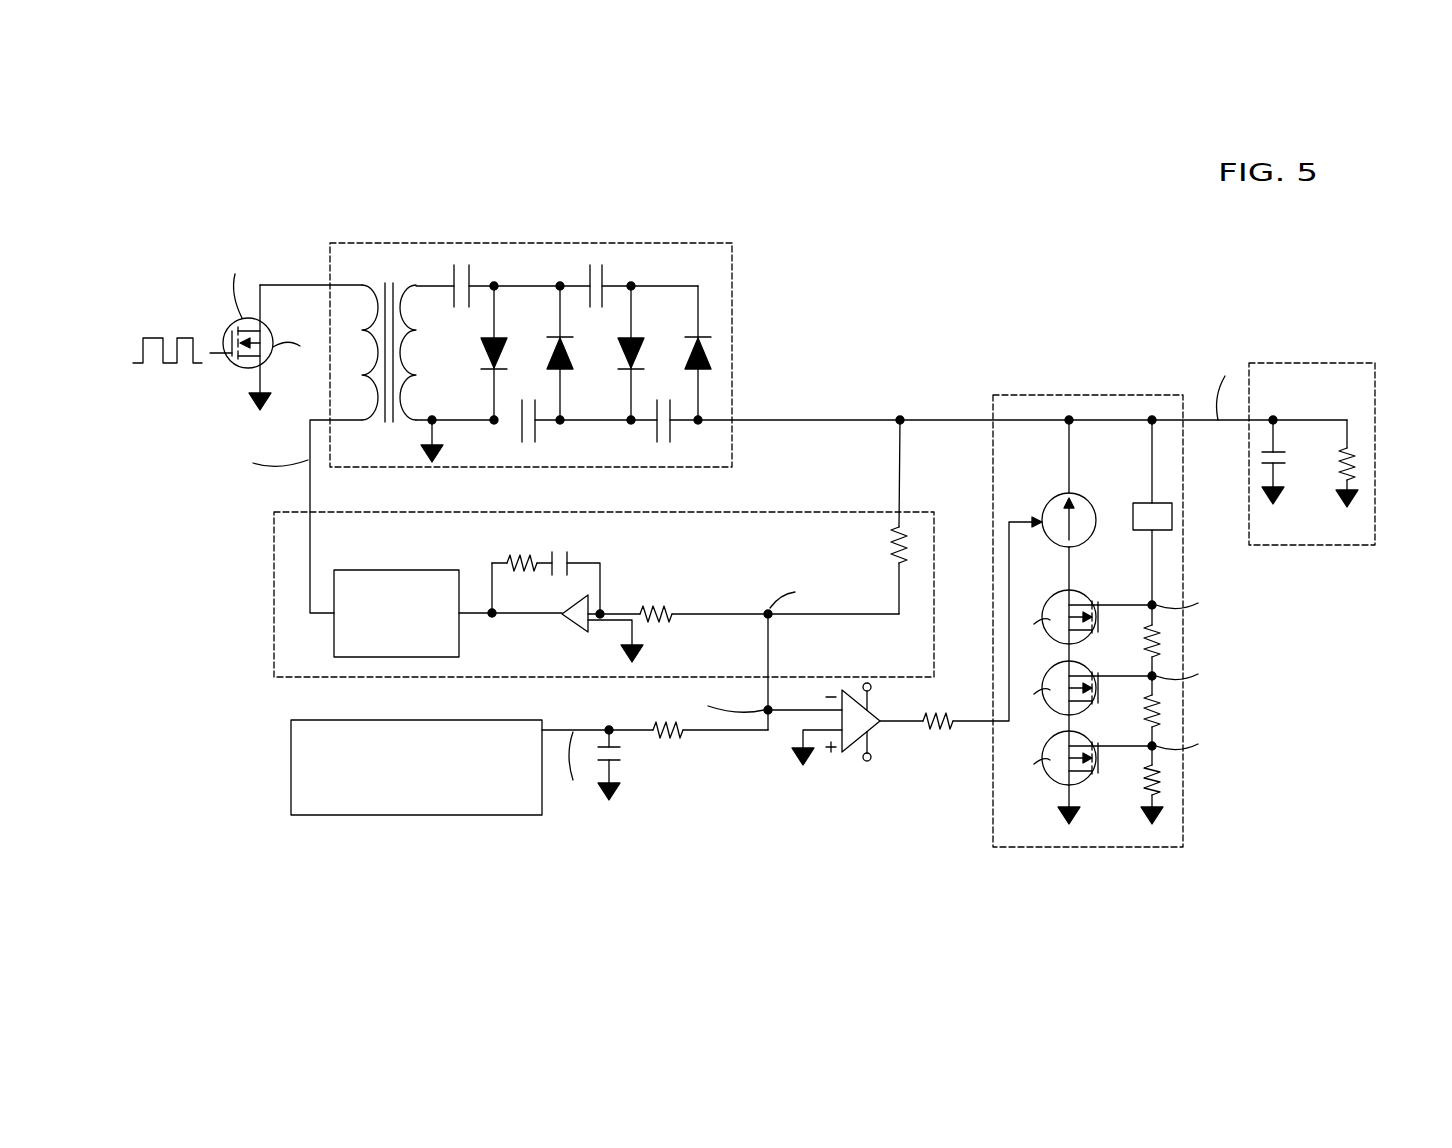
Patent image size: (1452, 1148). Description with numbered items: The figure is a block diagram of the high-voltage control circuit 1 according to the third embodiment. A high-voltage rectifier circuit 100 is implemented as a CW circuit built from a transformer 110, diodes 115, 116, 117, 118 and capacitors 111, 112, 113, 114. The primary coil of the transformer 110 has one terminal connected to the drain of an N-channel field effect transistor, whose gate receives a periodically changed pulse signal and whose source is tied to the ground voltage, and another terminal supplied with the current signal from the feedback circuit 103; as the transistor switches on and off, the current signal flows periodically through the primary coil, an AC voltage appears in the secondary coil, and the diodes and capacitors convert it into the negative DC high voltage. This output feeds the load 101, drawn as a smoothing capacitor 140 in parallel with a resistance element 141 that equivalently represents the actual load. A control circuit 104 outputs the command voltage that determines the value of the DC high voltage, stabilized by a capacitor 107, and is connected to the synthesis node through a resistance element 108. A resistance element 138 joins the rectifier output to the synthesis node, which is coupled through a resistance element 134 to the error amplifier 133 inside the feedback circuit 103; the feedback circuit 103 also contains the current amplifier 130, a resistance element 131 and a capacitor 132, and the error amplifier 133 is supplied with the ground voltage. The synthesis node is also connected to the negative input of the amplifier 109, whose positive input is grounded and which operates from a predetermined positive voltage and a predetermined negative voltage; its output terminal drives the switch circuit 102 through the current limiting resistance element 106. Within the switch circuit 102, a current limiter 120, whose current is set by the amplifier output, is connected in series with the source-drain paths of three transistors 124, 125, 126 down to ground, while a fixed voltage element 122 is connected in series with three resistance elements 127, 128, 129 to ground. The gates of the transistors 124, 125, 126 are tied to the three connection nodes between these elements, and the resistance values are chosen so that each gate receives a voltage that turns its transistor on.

The high-voltage control circuit 1 is at (908, 286).
The high-voltage rectifier circuit 100 is at (732, 282).
The load 101 is at (1305, 363).
The switch circuit 102 is at (1093, 395).
The feedback circuit 103 is at (274, 530).
The control circuit 104 is at (291, 737).
The current limiting resistance element 106 is at (955, 727).
The capacitor 107 is at (622, 748).
The resistance element 108 is at (683, 736).
The amplifier 109 is at (850, 755).
The transformer 110 is at (388, 283).
The capacitor 111 is at (461, 280).
The capacitor 112 is at (594, 280).
The capacitor 113 is at (526, 446).
The capacitor 114 is at (662, 446).
The diode 115 is at (528, 326).
The diode 116 is at (563, 370).
The diode 117 is at (635, 338).
The diode 118 is at (710, 353).
The current limiter 120 is at (1044, 514).
The fixed voltage element 122 is at (1172, 515).
The transistor 124 is at (1055, 605).
The transistor 125 is at (1055, 675).
The transistor 126 is at (1055, 745).
The resistance element 127 is at (1162, 640).
The resistance element 128 is at (1162, 710).
The resistance element 129 is at (1162, 780).
The current amplifier 130 is at (334, 640).
The resistance element 131 is at (505, 562).
The capacitor 132 is at (572, 556).
The error amplifier 133 is at (582, 628).
The resistance element 134 is at (665, 604).
The resistance element 138 is at (893, 540).
The smoothing capacitor 140 is at (1287, 464).
The resistance element 141 is at (1360, 458).